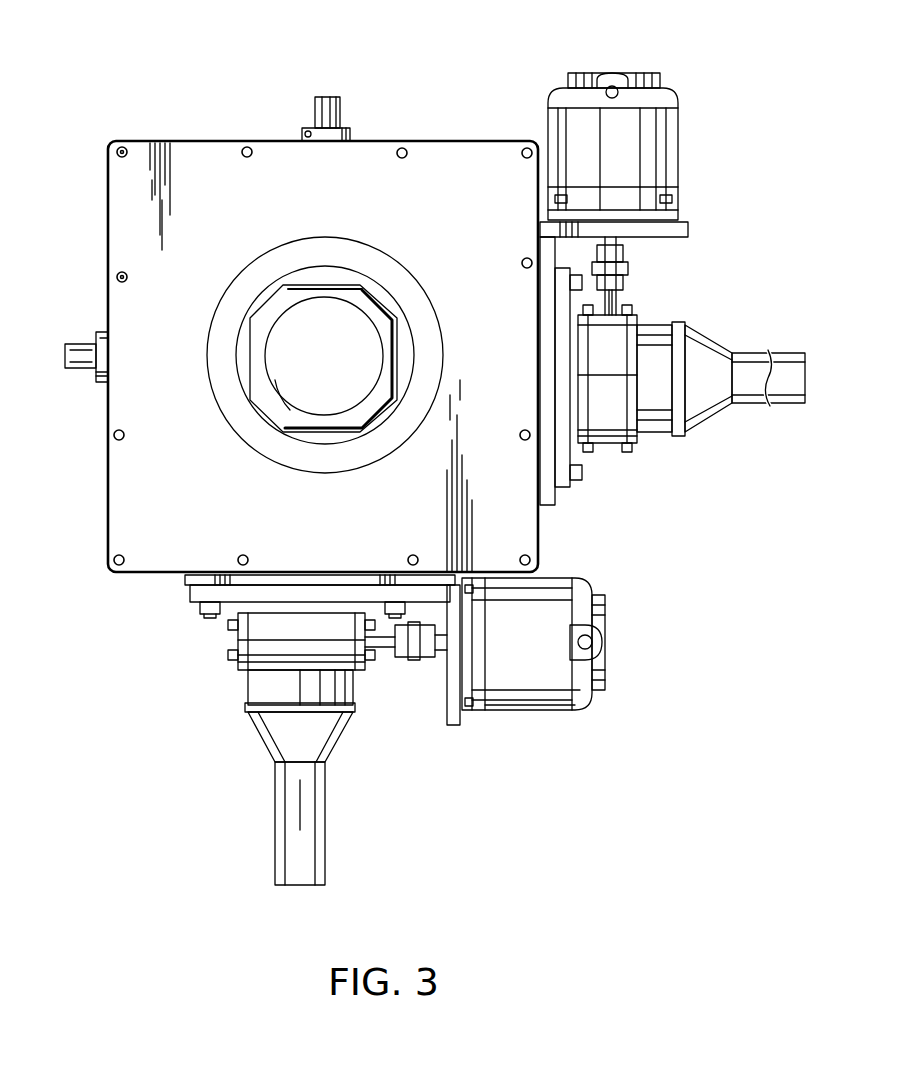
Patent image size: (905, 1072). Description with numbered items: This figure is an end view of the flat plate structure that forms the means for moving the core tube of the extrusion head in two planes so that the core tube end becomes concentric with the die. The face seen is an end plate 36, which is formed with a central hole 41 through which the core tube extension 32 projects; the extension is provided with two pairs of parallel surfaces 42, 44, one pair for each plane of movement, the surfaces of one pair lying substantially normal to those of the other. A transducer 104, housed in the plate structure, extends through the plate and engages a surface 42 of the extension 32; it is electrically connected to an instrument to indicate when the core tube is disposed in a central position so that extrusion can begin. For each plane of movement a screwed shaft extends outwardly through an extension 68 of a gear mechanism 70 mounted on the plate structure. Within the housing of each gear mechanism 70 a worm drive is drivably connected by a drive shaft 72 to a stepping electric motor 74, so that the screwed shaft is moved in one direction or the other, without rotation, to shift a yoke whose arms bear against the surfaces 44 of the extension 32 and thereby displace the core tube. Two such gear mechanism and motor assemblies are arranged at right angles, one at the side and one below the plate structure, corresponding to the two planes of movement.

The end plate 36 is at (458, 148).
The transducer 104 is at (318, 110).
The central hole 41 is at (255, 302).
The pair of parallel surfaces 42 is at (340, 288).
The pair of parallel surfaces 44 is at (268, 334).
The core tube extension 32 is at (290, 410).
The stepping electric motor 74 is at (680, 145).
The gear mechanism 70 is at (655, 325).
The extension of gear mechanism 68 is at (750, 355).
The drive shaft 72 is at (384, 655).